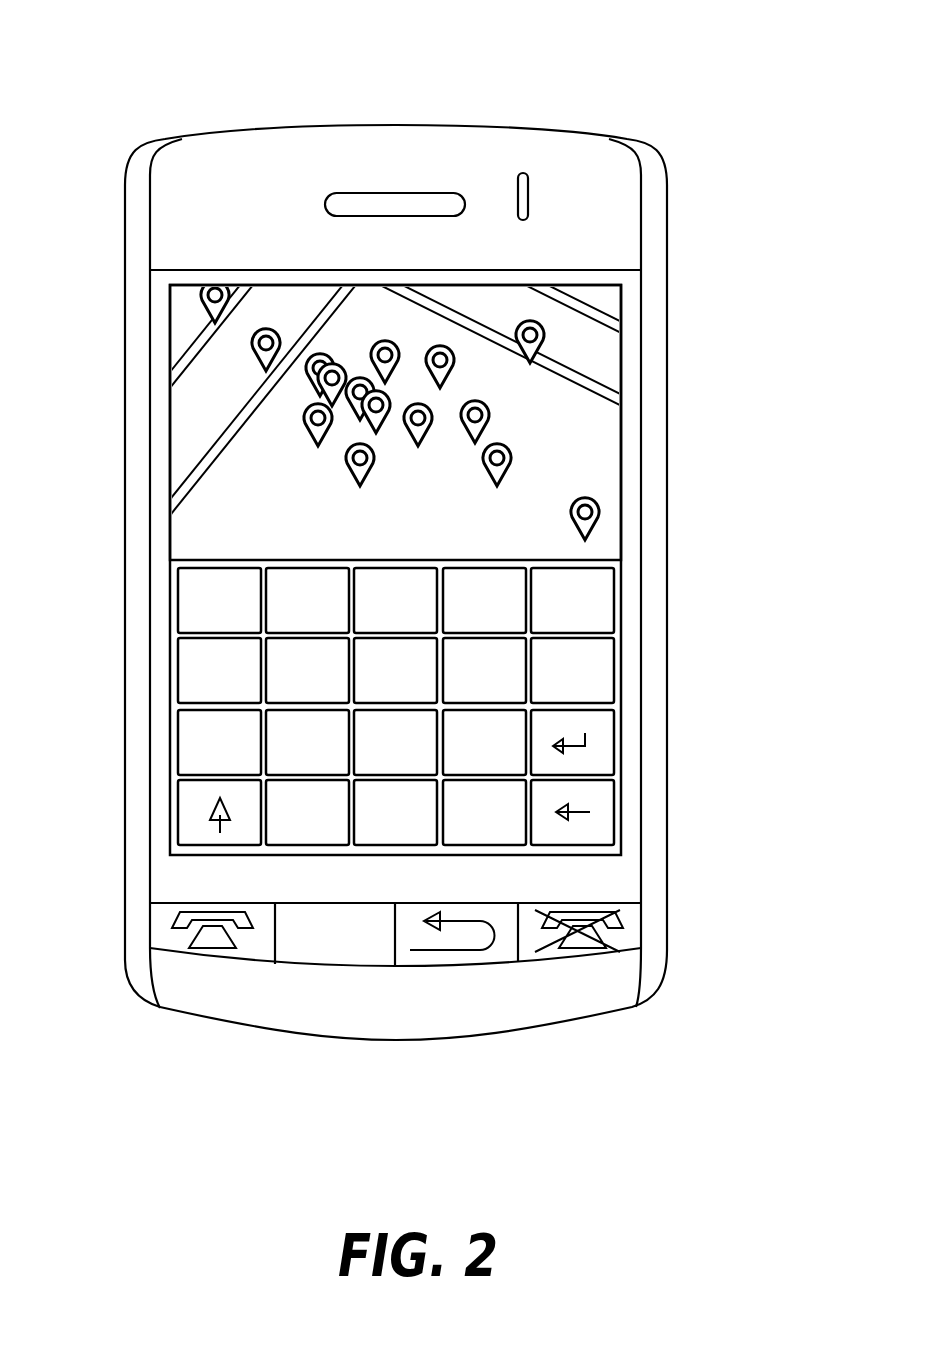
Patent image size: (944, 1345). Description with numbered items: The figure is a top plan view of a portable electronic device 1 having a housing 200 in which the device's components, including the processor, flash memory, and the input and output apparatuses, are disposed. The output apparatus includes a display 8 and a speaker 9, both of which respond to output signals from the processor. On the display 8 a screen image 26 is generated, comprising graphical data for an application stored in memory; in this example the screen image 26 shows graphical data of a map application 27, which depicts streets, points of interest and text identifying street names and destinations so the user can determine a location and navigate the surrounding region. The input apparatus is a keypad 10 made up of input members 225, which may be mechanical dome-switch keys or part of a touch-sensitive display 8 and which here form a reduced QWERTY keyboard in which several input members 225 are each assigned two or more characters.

The portable electronic device 1 is at (619, 92).
The display 8 is at (472, 498).
The speaker 9 is at (388, 192).
The keypad 10 is at (113, 958).
The screen image 26 is at (170, 488).
The map application 27 is at (224, 366).
The housing 200 is at (668, 524).
The input members 225 is at (186, 682).